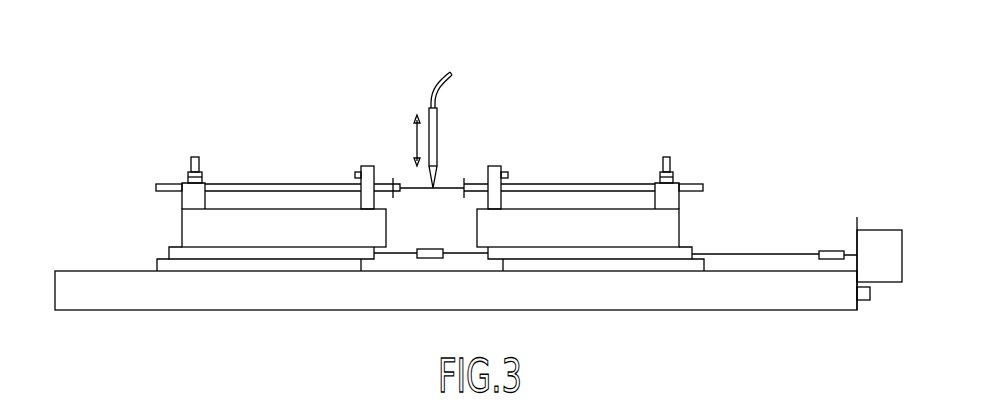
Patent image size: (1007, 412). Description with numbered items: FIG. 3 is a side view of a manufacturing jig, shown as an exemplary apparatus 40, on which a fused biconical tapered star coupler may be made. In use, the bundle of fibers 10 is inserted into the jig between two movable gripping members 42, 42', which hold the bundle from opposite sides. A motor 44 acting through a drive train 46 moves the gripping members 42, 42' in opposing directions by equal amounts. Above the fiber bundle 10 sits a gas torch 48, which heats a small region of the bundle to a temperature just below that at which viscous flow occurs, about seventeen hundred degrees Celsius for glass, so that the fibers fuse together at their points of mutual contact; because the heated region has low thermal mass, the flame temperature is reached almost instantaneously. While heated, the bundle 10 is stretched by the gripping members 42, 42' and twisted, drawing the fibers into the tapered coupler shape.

The apparatus 40 is at (750, 126).
The gripping member 42 is at (256, 214).
The gripping member 42' is at (616, 214).
The motor 44 is at (866, 230).
The drive train 46 is at (760, 255).
The gas torch 48 is at (437, 122).
The bundle of fibers 10 is at (445, 188).